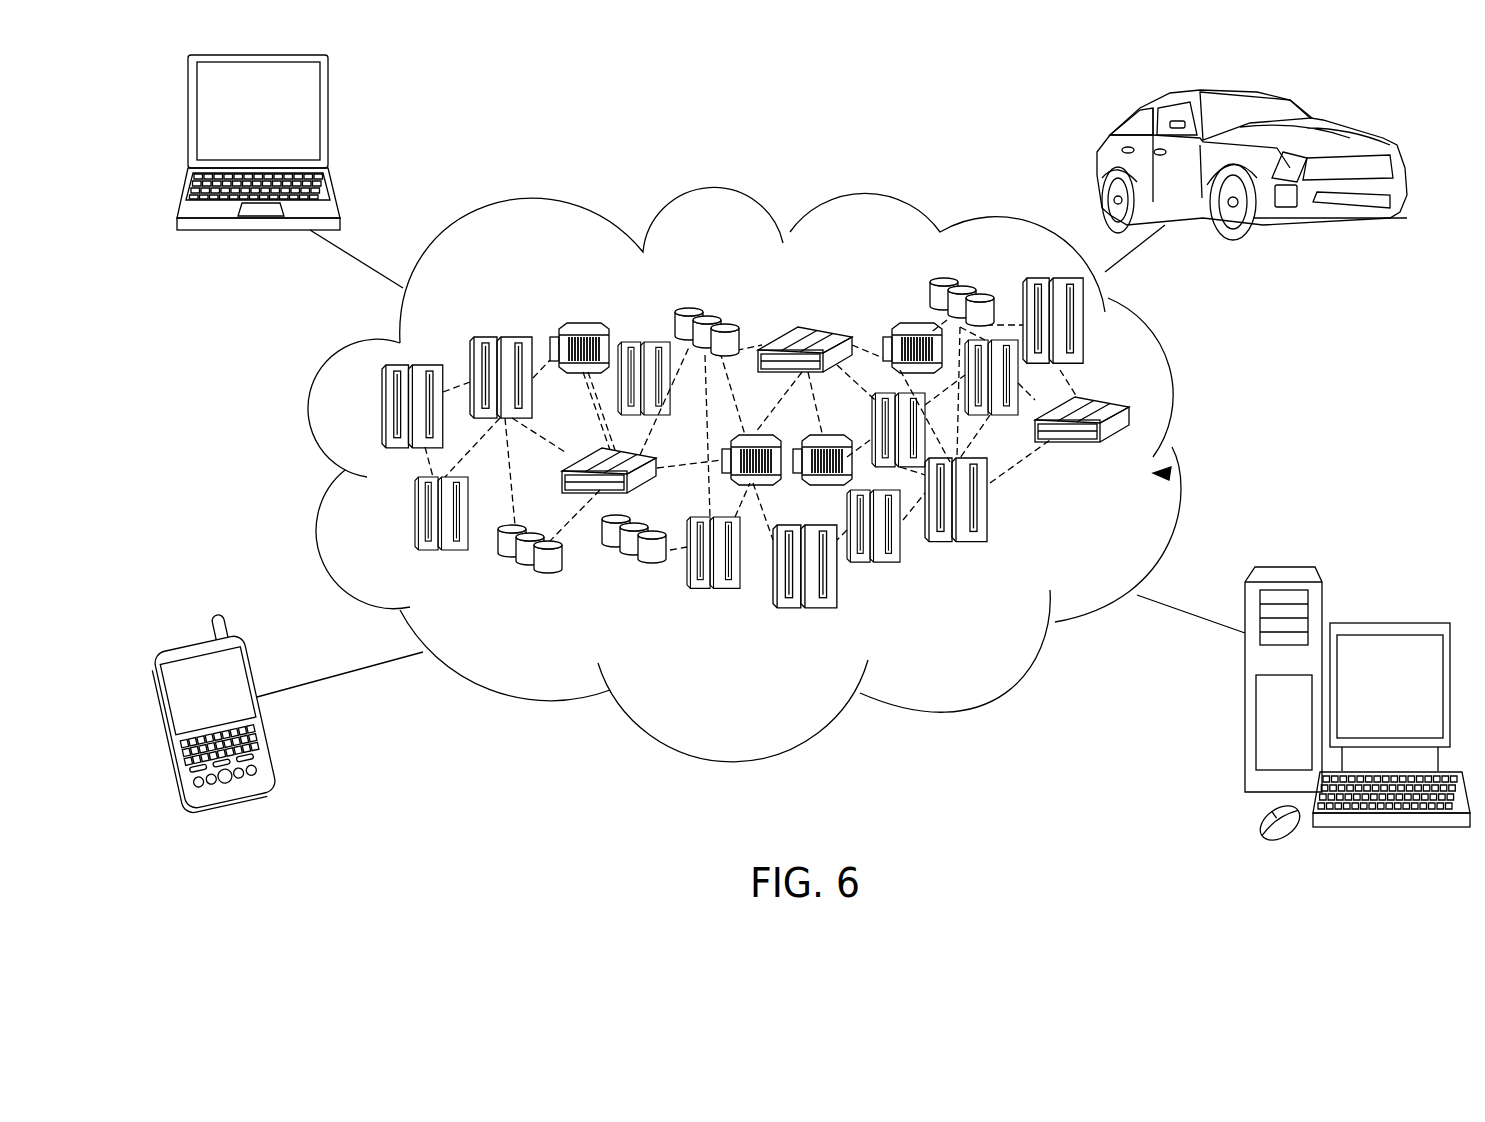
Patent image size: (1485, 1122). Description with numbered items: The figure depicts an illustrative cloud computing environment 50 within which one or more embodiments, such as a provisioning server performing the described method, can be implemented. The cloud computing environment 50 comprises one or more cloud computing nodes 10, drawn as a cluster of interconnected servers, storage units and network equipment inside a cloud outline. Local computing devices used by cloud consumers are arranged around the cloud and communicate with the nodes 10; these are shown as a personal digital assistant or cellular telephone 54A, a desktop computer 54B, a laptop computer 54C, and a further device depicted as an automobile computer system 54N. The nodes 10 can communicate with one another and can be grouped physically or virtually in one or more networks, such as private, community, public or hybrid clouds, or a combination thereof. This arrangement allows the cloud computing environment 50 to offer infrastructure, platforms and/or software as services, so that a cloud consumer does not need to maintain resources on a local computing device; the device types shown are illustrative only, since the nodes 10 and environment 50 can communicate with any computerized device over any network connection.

The cloud computing environment 50 is at (1178, 375).
The cloud computing node 10 is at (1165, 475).
The personal digital assistant (PDA) or cellular telephone 54A is at (165, 728).
The desktop computer 54B is at (1377, 623).
The laptop computer 54C is at (188, 118).
The automobile computer system 54N is at (1313, 110).